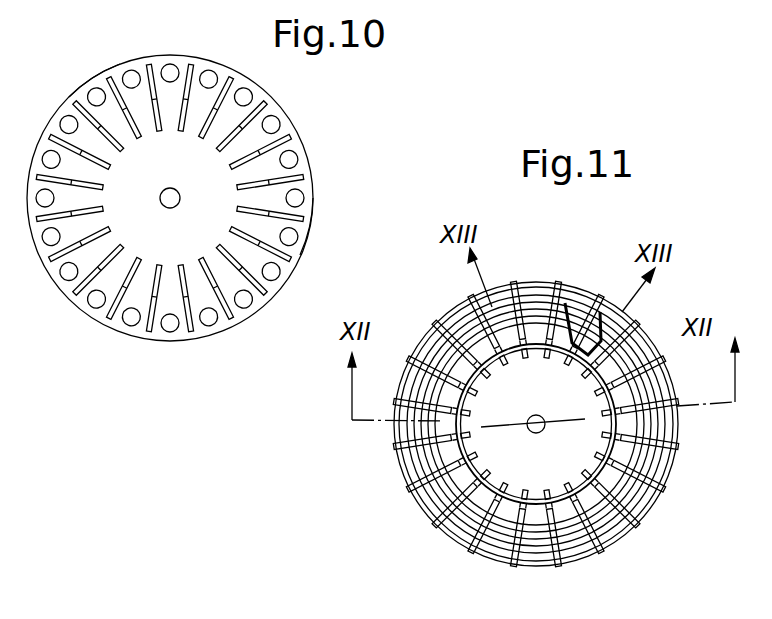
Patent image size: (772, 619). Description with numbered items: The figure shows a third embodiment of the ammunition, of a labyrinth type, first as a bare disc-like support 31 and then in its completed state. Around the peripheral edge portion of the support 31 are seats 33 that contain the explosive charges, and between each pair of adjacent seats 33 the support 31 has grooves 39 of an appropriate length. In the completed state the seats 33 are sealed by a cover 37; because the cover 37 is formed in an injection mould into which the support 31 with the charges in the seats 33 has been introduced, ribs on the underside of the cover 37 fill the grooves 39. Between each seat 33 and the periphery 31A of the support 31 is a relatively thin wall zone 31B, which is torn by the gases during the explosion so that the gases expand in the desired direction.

In FIG. 10, the disc-like support 31 is at (203, 332).
In FIG. 10, the periphery 31A is at (308, 248).
In FIG. 11, the periphery 31A is at (428, 513).
In FIG. 10, the wall zone 31B is at (86, 92).
In FIG. 10, the seats 33 is at (260, 316).
In FIG. 11, the seats 33 is at (647, 515).
In FIG. 11, the cover 37 is at (485, 553).
In FIG. 10, the grooves 39 is at (307, 172).